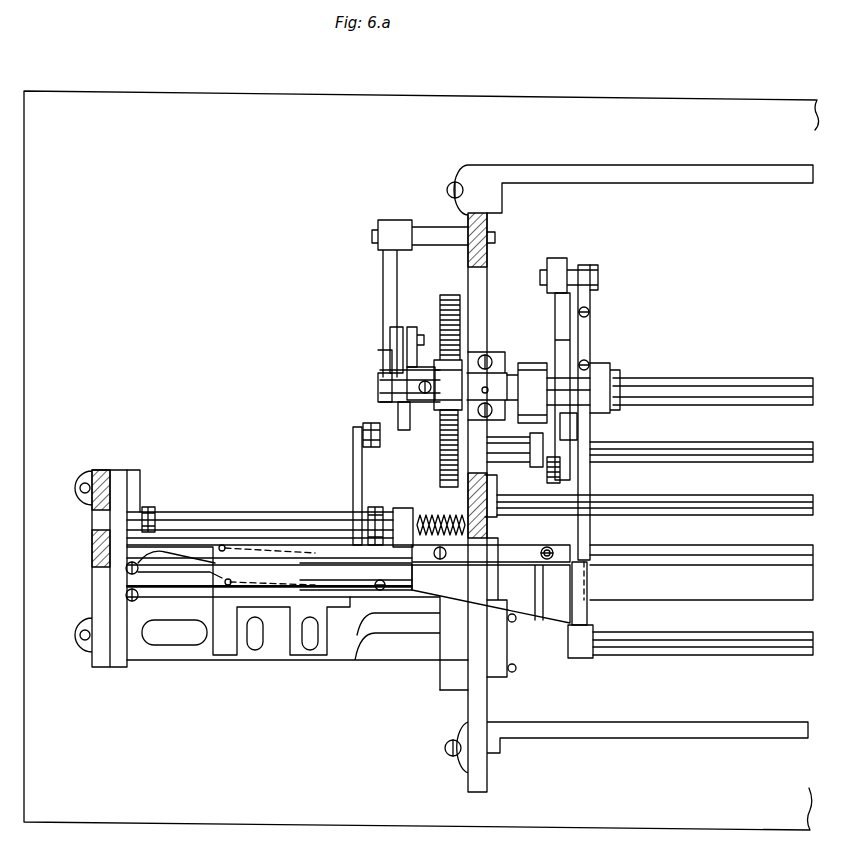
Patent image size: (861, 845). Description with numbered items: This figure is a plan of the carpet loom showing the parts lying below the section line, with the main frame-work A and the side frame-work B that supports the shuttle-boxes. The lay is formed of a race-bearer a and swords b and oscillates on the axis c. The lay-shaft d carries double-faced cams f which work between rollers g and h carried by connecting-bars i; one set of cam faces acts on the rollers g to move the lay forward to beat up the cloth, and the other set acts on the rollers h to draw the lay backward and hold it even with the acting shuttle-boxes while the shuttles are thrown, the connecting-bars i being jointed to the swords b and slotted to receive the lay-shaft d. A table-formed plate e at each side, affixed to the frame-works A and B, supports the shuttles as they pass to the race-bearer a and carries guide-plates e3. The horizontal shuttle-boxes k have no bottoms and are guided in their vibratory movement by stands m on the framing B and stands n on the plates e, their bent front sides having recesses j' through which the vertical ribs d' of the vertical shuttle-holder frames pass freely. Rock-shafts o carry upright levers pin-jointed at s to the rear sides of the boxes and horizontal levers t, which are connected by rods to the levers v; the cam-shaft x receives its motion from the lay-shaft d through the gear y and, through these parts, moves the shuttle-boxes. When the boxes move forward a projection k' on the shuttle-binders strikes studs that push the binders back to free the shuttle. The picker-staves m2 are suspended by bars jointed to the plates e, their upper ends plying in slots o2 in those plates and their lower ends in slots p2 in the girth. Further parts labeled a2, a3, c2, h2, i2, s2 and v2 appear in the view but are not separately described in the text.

The main frame-work A is at (626, 478).
The frame-work B is at (101, 568).
The race-bearer a is at (701, 572).
The arm a2 is at (417, 348).
The arm a3 is at (394, 350).
The swords b is at (490, 560).
The axis c is at (580, 641).
The nut c2 is at (371, 426).
The lay-shaft d is at (680, 388).
The vertical ribs d' is at (407, 416).
The table-formed plate e is at (348, 575).
The guide-plates e3 is at (491, 554).
The double-faced cams f is at (555, 386).
The rollers g is at (562, 448).
The rollers h is at (569, 275).
The shaft h2 is at (701, 451).
The connecting-bars i is at (584, 432).
The arm i2 is at (508, 437).
The recesses j' is at (275, 633).
The horizontal shuttle-boxes k is at (296, 618).
The projection k' is at (269, 571).
The stands m is at (135, 491).
The picker-staves m2 is at (180, 562).
The stands n is at (356, 576).
The rock-shafts o is at (260, 519).
The slots o2 is at (270, 566).
The slots p2 is at (222, 565).
The pin-joint s is at (262, 518).
The screw s2 is at (547, 545).
The horizontal levers t is at (293, 510).
The levers v is at (430, 298).
The block v2 is at (528, 393).
The cam-shaft x is at (440, 448).
The gear y is at (443, 352).